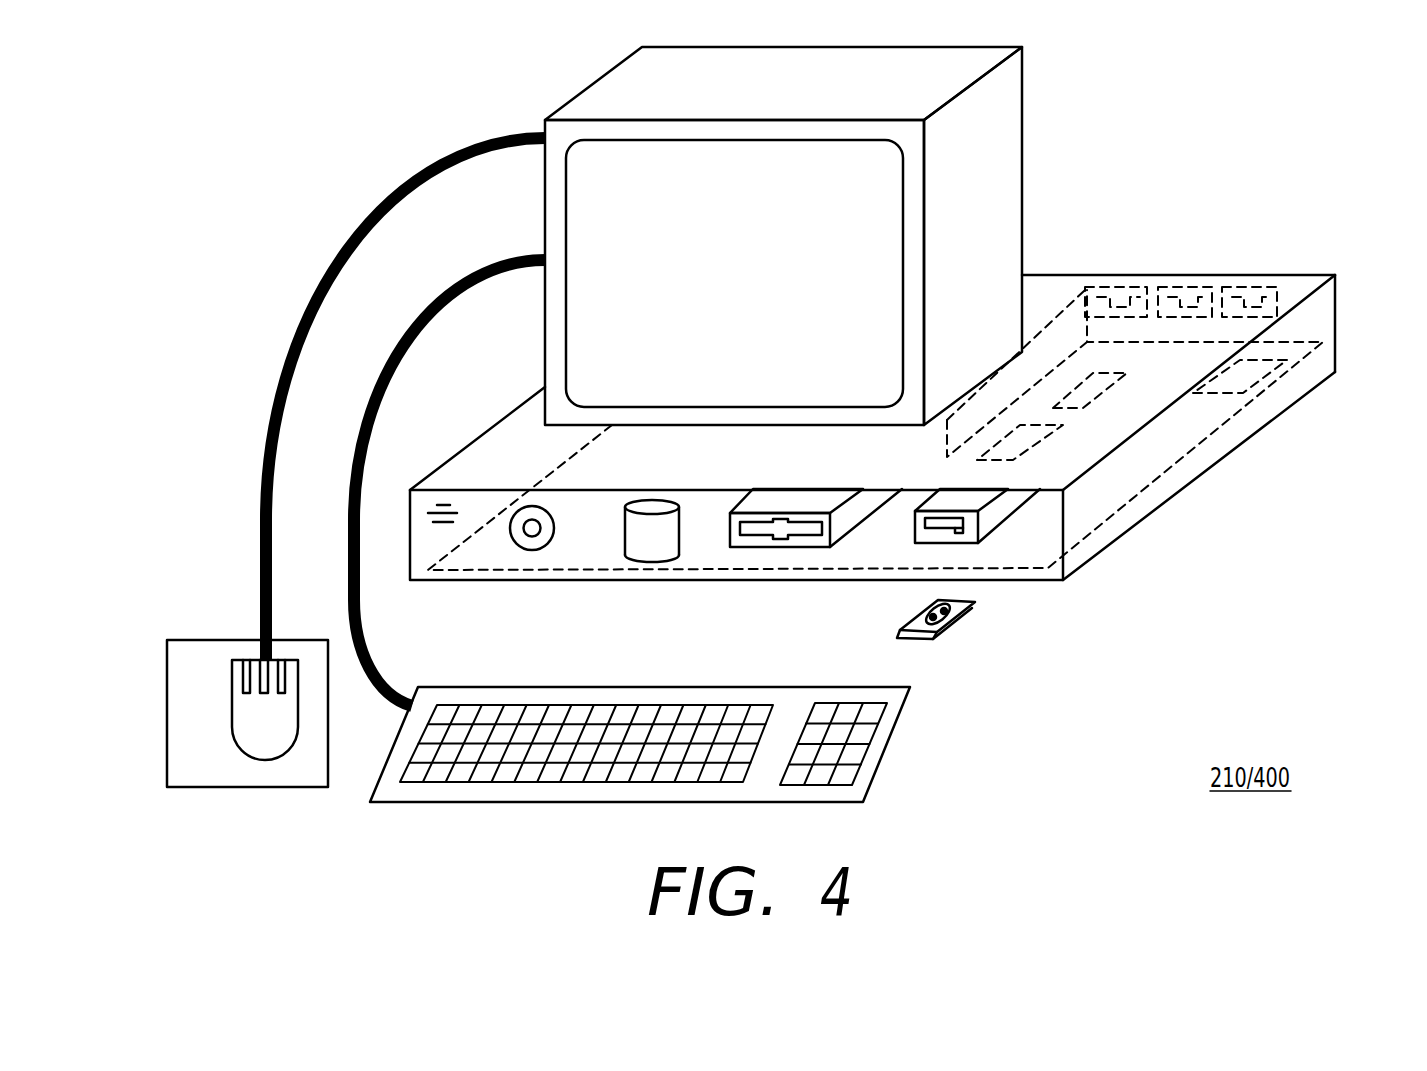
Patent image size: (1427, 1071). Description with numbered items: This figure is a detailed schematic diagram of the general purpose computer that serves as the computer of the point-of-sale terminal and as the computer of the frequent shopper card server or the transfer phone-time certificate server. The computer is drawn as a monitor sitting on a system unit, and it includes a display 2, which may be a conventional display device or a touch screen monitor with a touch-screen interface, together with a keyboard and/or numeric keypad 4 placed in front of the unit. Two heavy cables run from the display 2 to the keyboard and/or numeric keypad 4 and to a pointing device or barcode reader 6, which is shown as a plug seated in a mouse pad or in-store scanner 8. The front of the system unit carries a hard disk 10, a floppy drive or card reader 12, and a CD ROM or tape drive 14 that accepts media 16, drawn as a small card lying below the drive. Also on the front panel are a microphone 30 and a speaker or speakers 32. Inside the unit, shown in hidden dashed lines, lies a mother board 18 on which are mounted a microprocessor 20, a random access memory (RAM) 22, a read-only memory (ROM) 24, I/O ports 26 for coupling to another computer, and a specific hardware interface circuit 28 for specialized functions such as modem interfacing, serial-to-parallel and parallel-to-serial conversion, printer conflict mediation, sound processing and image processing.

The display 2 is at (1023, 116).
The keyboard and/or numeric keypad 4 is at (897, 720).
The pointing device or barcode reader 6 is at (268, 760).
The mouse pad or in-store scanner 8 is at (185, 640).
The hard disk 10 is at (652, 562).
The floppy drive or card reader 12 is at (772, 548).
The CD ROM or tape drive 14 is at (990, 535).
The media 16 is at (953, 620).
The mother board 18 is at (1322, 350).
The microprocessor 20 is at (1026, 454).
The random access memory (RAM) 22 is at (1133, 377).
The read-only memory (ROM) 24 is at (1253, 383).
The I/O ports 26 is at (1185, 282).
The specific hardware interface circuit 28 is at (1084, 292).
The microphone 30 is at (443, 527).
The speaker or speakers 32 is at (532, 550).